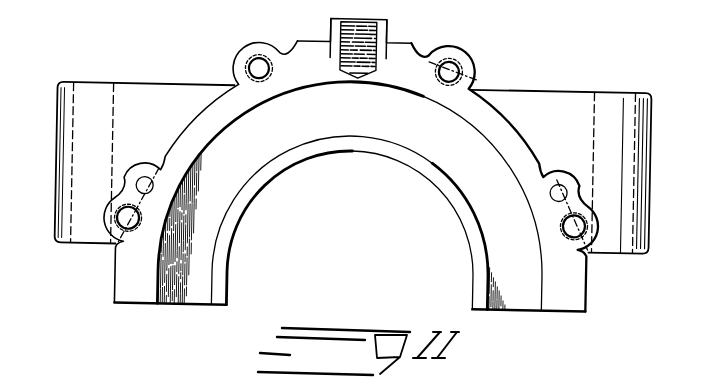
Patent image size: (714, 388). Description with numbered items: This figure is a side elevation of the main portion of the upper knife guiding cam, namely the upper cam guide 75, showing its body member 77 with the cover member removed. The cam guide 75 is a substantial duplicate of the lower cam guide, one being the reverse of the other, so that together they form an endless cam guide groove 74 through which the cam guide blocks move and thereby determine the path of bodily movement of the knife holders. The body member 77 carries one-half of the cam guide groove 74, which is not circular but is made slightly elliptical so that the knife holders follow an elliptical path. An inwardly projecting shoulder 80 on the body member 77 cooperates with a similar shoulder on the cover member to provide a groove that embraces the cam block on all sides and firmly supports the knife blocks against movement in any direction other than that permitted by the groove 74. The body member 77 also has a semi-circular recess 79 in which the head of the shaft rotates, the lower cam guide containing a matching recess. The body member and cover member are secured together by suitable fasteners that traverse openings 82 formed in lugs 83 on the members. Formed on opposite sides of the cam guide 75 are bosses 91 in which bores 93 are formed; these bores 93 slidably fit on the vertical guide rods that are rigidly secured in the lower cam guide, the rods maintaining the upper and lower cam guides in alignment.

The cam guide groove 74 is at (476, 176).
The cam guide 75 is at (200, 113).
The body member 77 is at (480, 108).
The semi-circular recess 79 is at (263, 193).
The inwardly projecting shoulder 80 is at (474, 272).
The openings 82 is at (231, 86).
The lugs 83 is at (242, 56).
The bosses 91 is at (79, 155).
The bores 93 is at (620, 212).